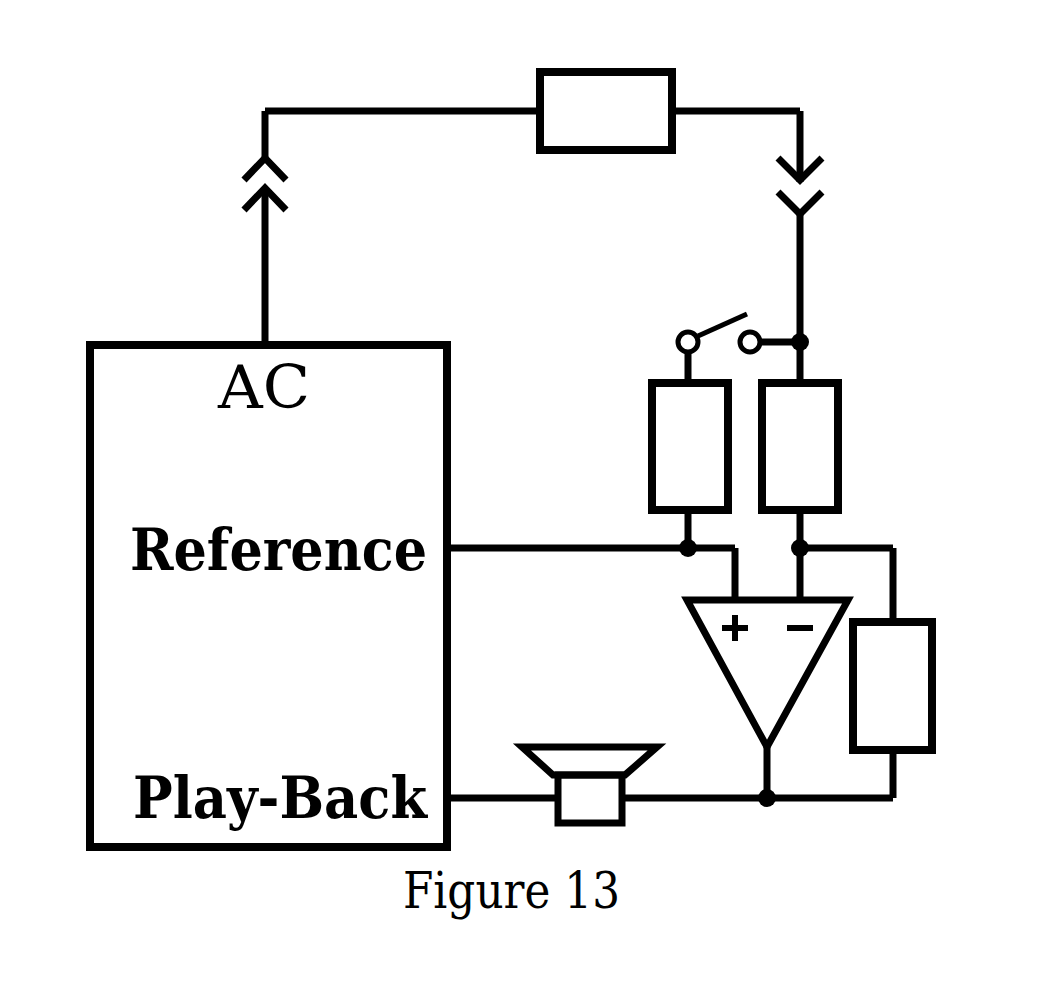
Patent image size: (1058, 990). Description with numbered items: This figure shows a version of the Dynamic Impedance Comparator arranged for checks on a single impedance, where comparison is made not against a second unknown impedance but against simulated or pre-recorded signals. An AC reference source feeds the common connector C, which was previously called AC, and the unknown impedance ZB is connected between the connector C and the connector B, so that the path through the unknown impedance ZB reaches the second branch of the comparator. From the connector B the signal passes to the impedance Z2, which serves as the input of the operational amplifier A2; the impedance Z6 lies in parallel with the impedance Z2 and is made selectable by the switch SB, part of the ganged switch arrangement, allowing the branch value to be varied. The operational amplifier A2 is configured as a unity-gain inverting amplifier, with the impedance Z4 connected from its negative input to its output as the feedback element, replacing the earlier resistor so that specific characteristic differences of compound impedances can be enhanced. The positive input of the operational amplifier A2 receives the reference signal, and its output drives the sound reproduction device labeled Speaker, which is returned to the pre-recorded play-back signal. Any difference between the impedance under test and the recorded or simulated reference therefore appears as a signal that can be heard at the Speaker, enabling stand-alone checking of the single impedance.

The common connector C is at (240, 228).
The connector B is at (824, 226).
The unknown impedance ZB is at (606, 75).
The switch SB is at (737, 295).
The impedance Z2 is at (838, 426).
The impedance Z6 is at (845, 527).
The impedance Z4 is at (870, 711).
The operational amplifier A2 is at (767, 673).
The sound reproduction device Speaker is at (590, 746).